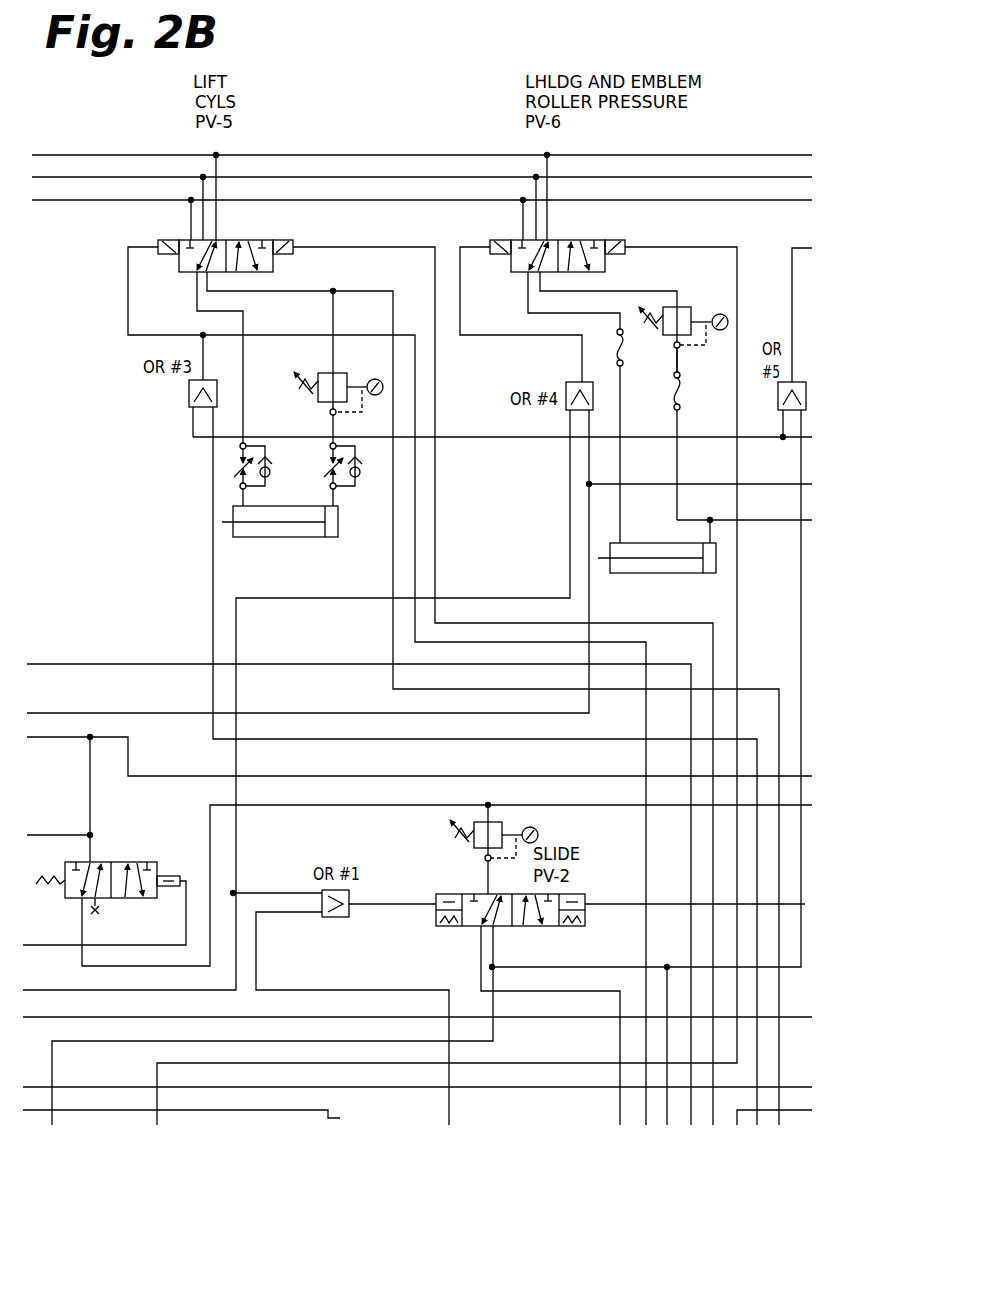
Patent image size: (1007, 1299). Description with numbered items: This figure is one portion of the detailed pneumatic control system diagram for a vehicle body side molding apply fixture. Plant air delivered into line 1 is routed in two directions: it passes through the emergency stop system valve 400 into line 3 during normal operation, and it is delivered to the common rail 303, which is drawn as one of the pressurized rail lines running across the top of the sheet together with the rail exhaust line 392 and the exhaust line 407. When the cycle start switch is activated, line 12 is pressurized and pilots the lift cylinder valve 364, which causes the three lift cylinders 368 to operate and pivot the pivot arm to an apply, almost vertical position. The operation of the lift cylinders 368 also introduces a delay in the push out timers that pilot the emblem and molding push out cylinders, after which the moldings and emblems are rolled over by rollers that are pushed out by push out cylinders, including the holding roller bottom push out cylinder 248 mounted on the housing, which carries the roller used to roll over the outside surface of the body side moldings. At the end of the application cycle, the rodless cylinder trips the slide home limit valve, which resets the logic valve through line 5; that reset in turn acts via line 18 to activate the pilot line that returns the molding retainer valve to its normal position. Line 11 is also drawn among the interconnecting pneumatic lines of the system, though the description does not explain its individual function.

The line 1 is at (70, 740).
The line 3 is at (80, 932).
The line 5 is at (127, 1087).
The pneumatic line 11 is at (100, 664).
The line 12 is at (437, 532).
The line 18 is at (755, 484).
The push out cylinder 248 is at (716, 560).
The common rail 303 is at (768, 177).
The valve 364 is at (273, 266).
The lift cylinders 368 is at (338, 528).
The rail exhaust line 392 is at (785, 202).
The emergency stop system valve 400 is at (107, 862).
The exhaust line 407 is at (735, 155).